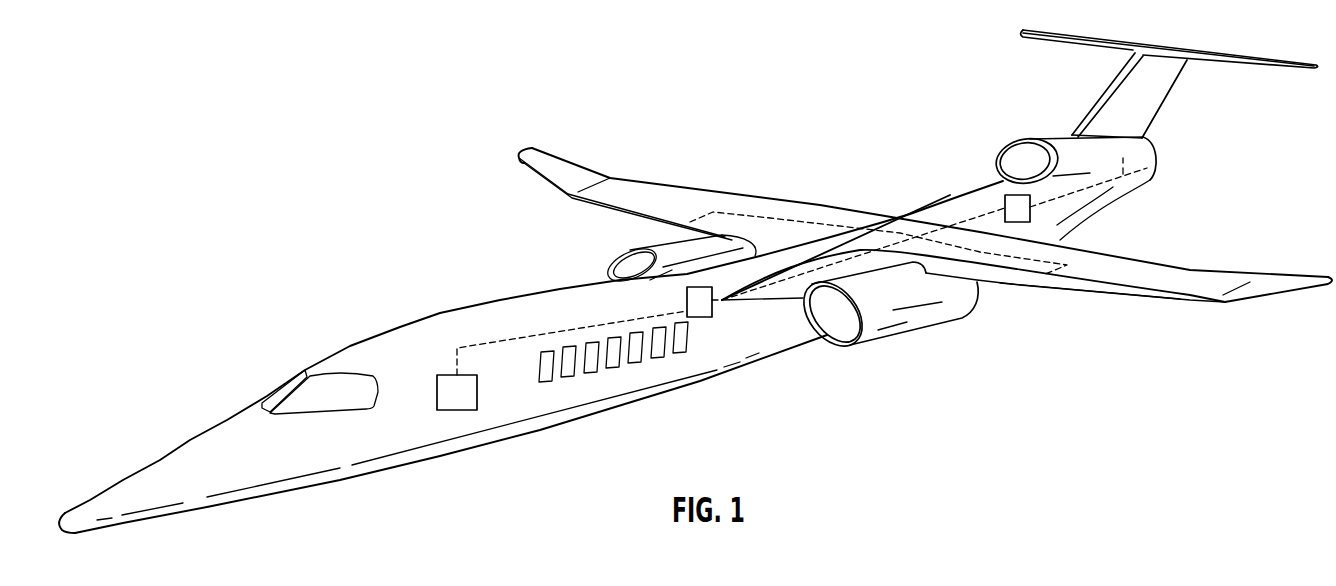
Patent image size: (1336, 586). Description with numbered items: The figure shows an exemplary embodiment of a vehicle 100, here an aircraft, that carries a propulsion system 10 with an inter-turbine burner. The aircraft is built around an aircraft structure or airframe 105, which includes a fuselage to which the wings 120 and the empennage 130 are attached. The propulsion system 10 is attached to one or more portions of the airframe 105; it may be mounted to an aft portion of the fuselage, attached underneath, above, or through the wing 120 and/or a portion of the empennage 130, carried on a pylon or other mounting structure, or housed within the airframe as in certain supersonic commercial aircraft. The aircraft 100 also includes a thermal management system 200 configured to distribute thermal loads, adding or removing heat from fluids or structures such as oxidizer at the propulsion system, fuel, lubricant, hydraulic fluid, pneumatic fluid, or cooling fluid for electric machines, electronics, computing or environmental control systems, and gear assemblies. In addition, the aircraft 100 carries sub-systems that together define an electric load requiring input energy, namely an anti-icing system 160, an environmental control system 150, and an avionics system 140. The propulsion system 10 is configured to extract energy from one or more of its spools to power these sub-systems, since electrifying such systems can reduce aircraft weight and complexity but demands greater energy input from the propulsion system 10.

The vehicle 100 is at (283, 134).
The airframe 105 is at (508, 248).
The wings 120 is at (681, 206).
The propulsion system 10 is at (644, 256).
The empennage 130 is at (1188, 91).
The avionics system 140 is at (478, 393).
The environmental control system 150 is at (713, 309).
The anti-icing system 160 is at (1018, 286).
The thermal management system 200 is at (1004, 206).